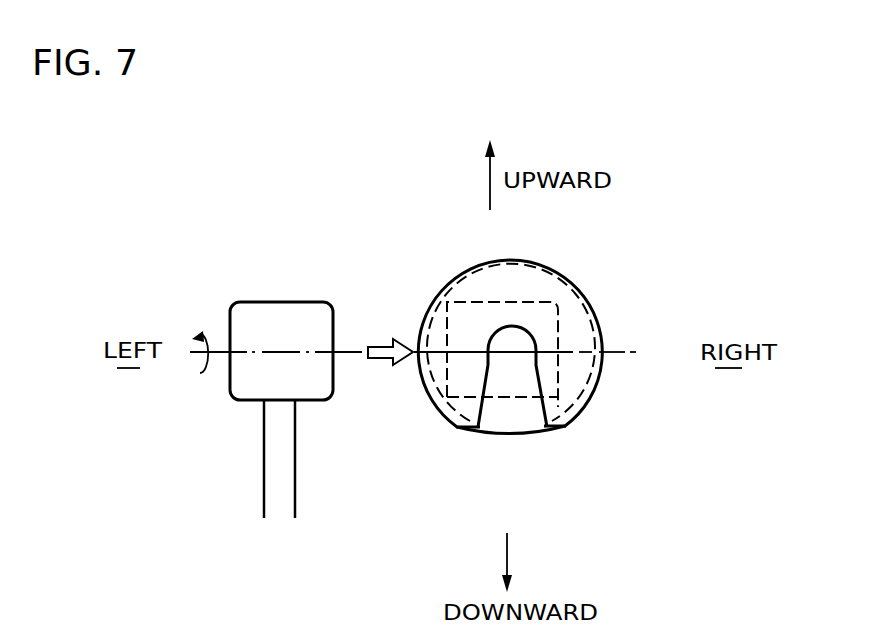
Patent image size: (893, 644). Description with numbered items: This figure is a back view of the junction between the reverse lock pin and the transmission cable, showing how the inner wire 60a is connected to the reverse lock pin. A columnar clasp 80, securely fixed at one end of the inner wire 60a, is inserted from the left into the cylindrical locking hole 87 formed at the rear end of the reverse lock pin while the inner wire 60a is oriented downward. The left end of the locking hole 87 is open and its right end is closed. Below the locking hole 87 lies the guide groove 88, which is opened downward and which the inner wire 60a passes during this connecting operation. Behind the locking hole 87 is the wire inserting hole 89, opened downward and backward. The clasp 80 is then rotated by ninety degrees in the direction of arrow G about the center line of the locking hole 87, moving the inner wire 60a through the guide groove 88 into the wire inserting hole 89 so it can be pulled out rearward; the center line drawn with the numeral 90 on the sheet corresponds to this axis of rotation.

The columnar clasp 80 is at (238, 304).
The inner wire 60a is at (264, 513).
The cylindrical locking hole 87 is at (555, 296).
The guide groove 88 is at (457, 429).
The wire inserting hole 89 is at (517, 360).
The rotation axis 90 is at (618, 357).
The arrow indicating rotation direction G is at (190, 339).